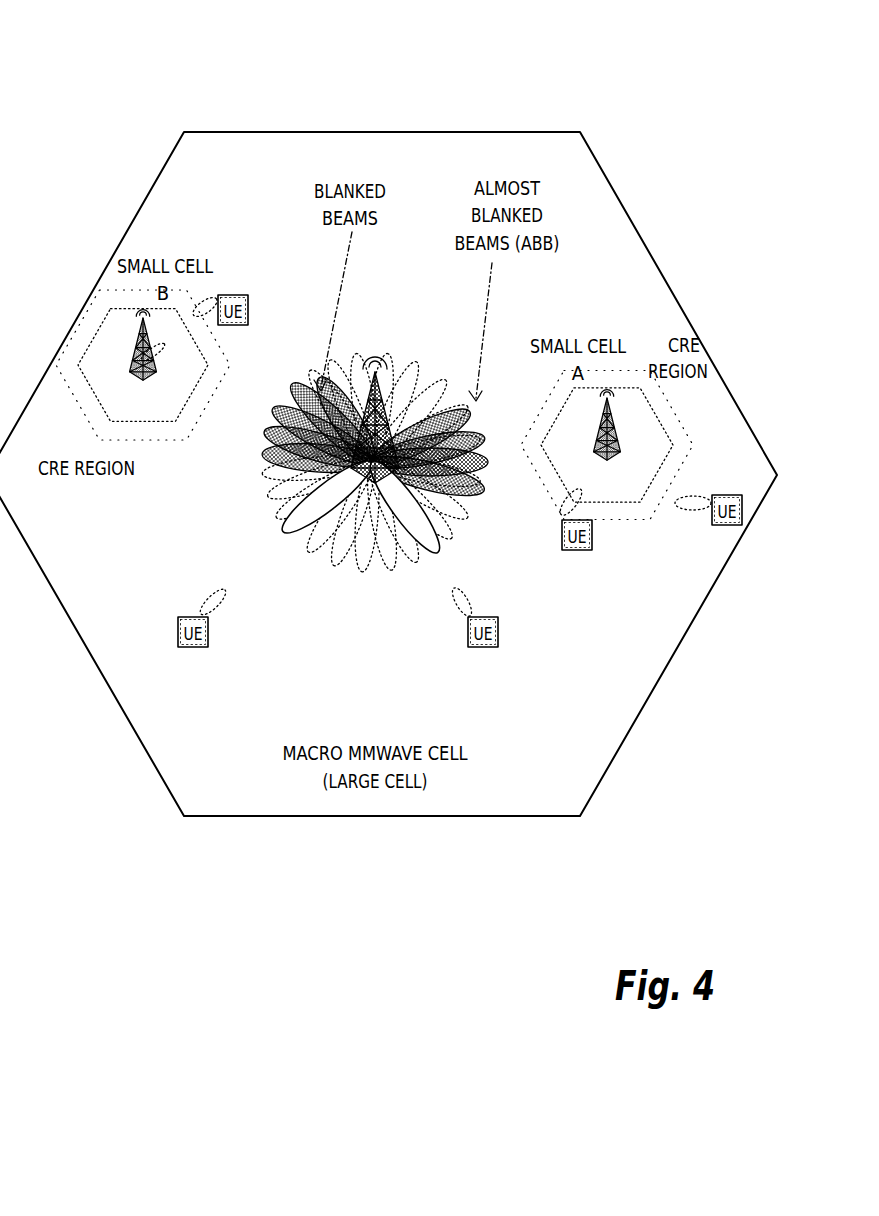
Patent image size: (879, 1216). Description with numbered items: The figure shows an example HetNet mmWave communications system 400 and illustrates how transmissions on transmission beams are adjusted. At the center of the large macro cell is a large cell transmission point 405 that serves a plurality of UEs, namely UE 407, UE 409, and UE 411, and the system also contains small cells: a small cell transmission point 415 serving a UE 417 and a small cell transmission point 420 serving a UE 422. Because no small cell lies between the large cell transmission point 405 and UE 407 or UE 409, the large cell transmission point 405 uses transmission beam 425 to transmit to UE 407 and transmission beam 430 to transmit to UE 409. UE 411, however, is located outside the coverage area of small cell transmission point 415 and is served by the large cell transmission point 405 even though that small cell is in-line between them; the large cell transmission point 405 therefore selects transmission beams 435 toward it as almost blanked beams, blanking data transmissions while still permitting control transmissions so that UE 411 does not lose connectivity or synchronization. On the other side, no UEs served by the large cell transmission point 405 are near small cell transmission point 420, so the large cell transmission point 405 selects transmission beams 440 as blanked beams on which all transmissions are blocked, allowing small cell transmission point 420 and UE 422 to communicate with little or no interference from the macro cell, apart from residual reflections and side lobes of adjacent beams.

The HetNet mmWave communications system 400 is at (112, 36).
The large cell transmission point 405 is at (385, 398).
The UE 407 is at (190, 616).
The UE 409 is at (490, 616).
The UE 411 is at (725, 495).
The small cell transmission point 415 is at (620, 437).
The UE 417 is at (593, 525).
The small cell transmission point 420 is at (128, 375).
The UE 422 is at (233, 295).
The transmission beam 425 is at (293, 520).
The transmission beam 430 is at (418, 544).
The transmission beams 435 is at (493, 515).
The transmission beams 440 is at (245, 461).